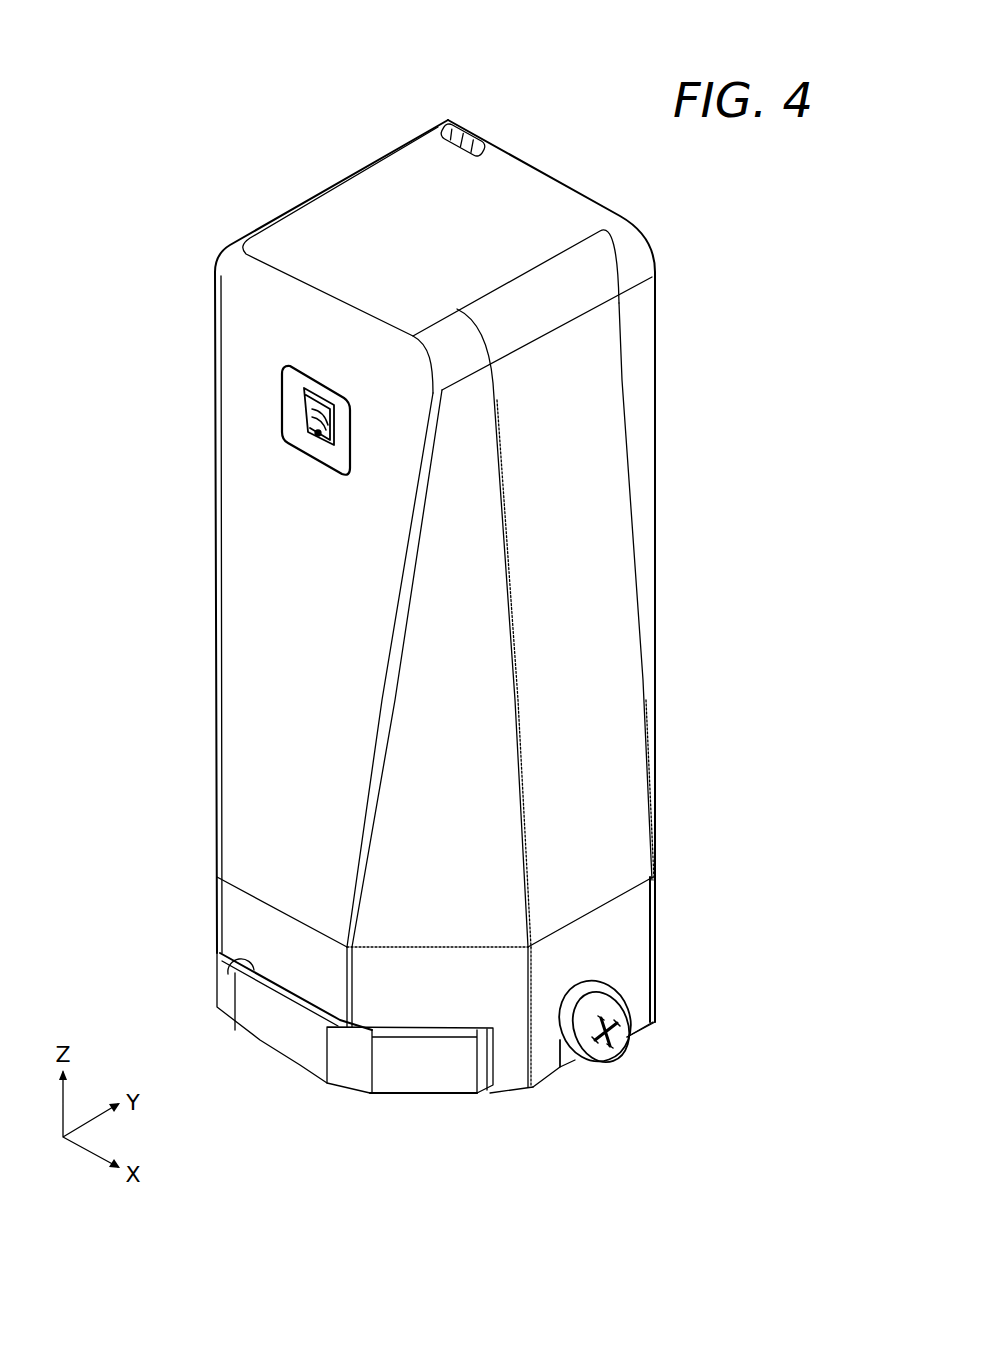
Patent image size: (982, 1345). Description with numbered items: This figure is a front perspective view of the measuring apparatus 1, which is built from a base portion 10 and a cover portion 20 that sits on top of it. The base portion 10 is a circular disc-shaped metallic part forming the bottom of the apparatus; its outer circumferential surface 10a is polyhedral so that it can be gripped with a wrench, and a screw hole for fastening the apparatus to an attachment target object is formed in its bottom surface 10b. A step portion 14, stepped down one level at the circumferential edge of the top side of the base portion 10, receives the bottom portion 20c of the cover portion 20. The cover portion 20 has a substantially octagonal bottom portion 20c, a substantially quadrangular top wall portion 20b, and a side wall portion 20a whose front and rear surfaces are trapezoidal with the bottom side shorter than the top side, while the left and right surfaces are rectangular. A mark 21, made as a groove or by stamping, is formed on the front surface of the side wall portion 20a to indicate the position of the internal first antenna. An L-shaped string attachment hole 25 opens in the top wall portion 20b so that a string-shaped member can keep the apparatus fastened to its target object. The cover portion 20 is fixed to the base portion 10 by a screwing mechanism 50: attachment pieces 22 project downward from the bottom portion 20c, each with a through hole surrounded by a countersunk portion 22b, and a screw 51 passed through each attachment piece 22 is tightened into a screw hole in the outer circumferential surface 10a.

The measuring apparatus 1 is at (285, 160).
The base portion 10 is at (283, 1062).
The outer circumferential surface 10a is at (428, 1077).
The bottom surface 10b is at (388, 1107).
The step portion 14 is at (228, 976).
The cover portion 20 is at (218, 560).
The side wall portion 20a is at (594, 685).
The top wall portion 20b is at (396, 220).
The bottom portion 20c is at (238, 919).
The mark 21 is at (272, 407).
The attachment piece 22 is at (640, 1018).
The countersunk portion 22b is at (568, 1062).
The string attachment hole 25 is at (456, 124).
The screwing mechanism 50 is at (673, 1009).
The screw 51 is at (616, 1042).